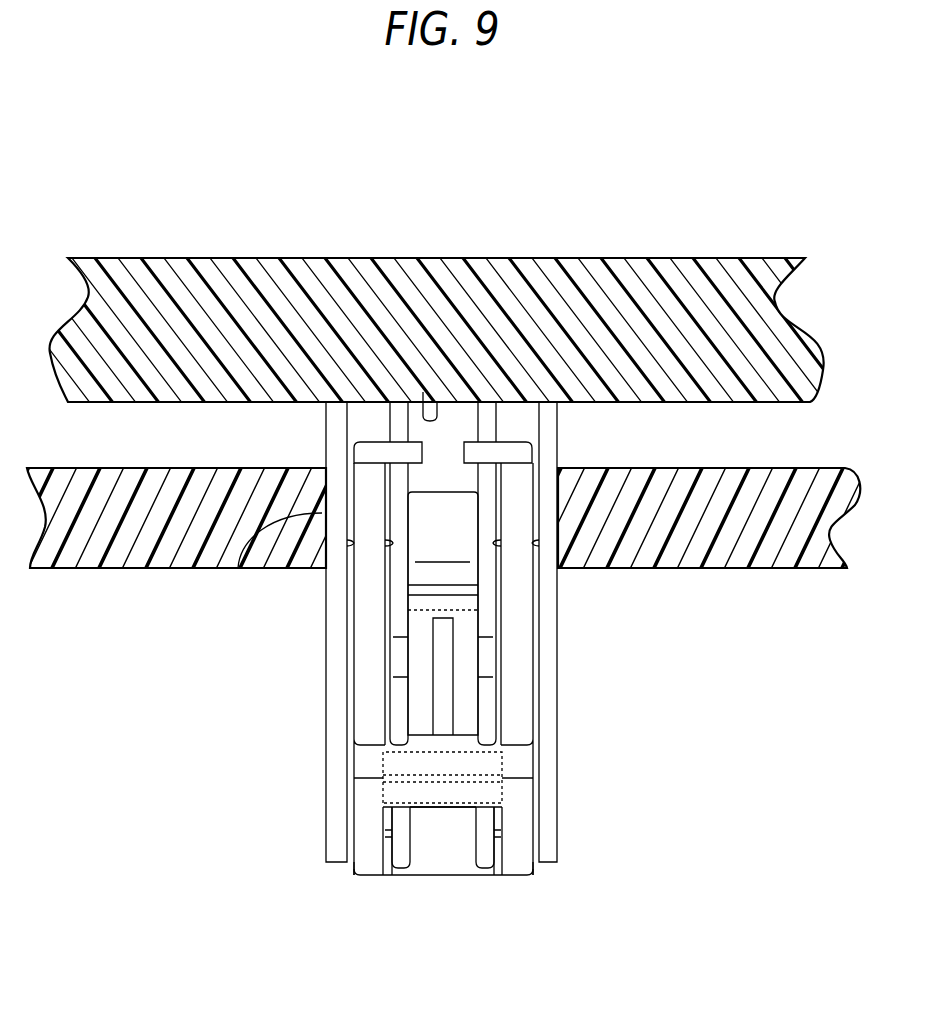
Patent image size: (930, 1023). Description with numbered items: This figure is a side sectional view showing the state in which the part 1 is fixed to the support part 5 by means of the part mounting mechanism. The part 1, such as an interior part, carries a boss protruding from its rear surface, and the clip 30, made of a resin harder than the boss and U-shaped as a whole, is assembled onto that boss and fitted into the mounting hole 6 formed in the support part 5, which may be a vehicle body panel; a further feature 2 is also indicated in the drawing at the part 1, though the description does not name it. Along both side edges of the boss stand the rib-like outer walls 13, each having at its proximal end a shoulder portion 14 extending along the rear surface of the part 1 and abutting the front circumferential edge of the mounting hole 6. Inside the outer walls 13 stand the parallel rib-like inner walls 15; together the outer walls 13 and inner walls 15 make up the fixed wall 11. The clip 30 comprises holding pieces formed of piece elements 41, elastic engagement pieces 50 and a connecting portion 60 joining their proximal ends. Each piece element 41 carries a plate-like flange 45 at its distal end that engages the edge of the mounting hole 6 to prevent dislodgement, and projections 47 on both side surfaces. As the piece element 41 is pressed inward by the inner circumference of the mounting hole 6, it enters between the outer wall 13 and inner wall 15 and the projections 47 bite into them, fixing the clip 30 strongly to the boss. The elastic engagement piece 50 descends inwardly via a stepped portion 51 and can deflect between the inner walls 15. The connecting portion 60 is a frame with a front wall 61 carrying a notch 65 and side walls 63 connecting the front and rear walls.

The part 1 is at (487, 258).
The through hole 2 is at (437, 402).
The support part 5 is at (78, 568).
The mounting hole 6 is at (238, 568).
The fixed wall 11 is at (252, 183).
The outer wall 13 is at (338, 482).
The shoulder portion 14 is at (324, 453).
The inner wall 15 is at (400, 416).
The clip 30 is at (552, 877).
The piece element 41 is at (363, 728).
The flange 45 is at (484, 416).
The projection 47 is at (345, 548).
The elastic engagement piece 50 is at (468, 709).
The stepped portion 51 is at (432, 583).
The connecting portion 60 is at (380, 888).
The front wall 61 is at (475, 792).
The side wall 63 is at (365, 873).
The notch 65 is at (465, 810).